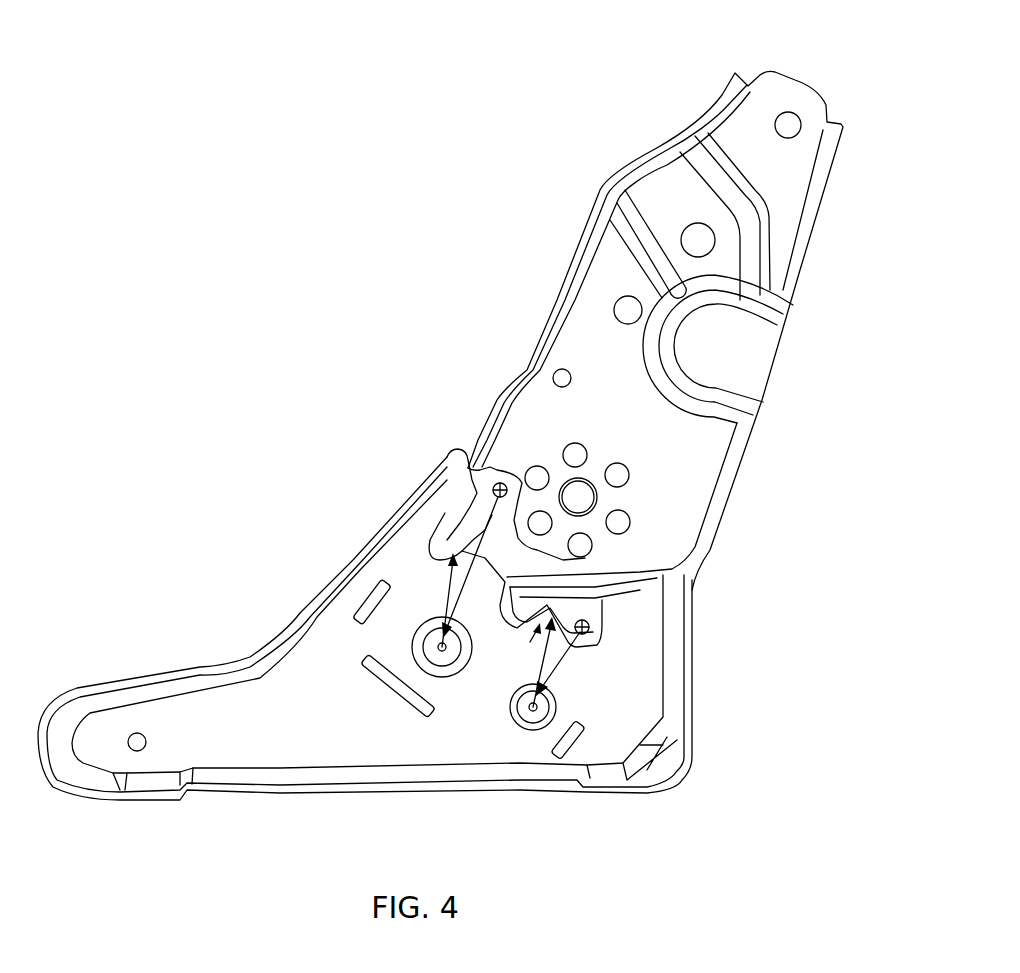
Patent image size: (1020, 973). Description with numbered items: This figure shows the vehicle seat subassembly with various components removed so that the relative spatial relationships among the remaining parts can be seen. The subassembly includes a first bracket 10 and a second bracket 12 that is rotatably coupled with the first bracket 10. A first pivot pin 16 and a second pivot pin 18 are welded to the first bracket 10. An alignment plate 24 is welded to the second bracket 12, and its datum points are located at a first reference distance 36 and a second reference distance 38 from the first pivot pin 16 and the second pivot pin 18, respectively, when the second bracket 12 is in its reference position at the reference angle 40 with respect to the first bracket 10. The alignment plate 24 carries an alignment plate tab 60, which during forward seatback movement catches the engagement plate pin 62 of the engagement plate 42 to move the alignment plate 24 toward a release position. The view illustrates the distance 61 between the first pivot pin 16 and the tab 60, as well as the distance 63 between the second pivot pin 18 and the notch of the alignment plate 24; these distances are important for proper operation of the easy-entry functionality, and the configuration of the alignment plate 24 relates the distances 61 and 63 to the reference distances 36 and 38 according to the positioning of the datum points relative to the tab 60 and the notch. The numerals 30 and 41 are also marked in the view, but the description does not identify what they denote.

The first bracket 10 is at (257, 755).
The second bracket 12 is at (597, 288).
The first pivot pin 16 is at (440, 648).
The second pivot pin 18 is at (530, 708).
The alignment plate 24 is at (480, 517).
The bracket assembly 30 is at (332, 288).
The first reference distance 36 is at (501, 483).
The second reference distance 38 is at (590, 627).
The reference angle 40 is at (470, 567).
The locating hole 41 is at (578, 497).
The engagement plate 42 is at (561, 664).
The alignment plate tab 60 is at (427, 556).
The distance 61 is at (447, 592).
The engagement plate pin 62 is at (533, 630).
The distance 63 is at (547, 665).